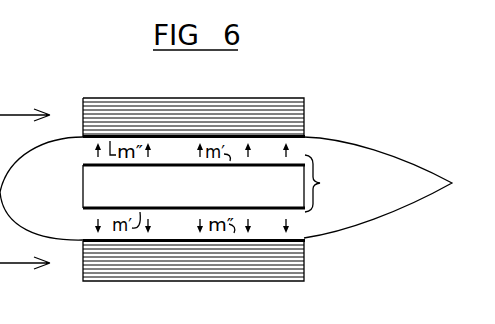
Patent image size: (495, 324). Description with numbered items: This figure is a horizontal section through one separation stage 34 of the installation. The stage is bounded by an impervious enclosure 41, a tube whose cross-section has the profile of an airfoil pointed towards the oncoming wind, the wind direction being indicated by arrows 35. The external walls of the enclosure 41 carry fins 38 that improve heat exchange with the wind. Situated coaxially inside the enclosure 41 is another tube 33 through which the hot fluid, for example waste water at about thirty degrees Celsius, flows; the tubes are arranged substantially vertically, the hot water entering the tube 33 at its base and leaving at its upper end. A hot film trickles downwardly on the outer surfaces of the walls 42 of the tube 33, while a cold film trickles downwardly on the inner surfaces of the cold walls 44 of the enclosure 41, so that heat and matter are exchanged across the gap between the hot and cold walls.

The tube 33 is at (93, 194).
The separation stage 34 is at (88, 164).
The arrows 35 is at (22, 115).
The fins 38 is at (230, 110).
The impervious enclosure 41 is at (338, 152).
The walls 42 is at (328, 183).
The cold walls 44 is at (293, 141).